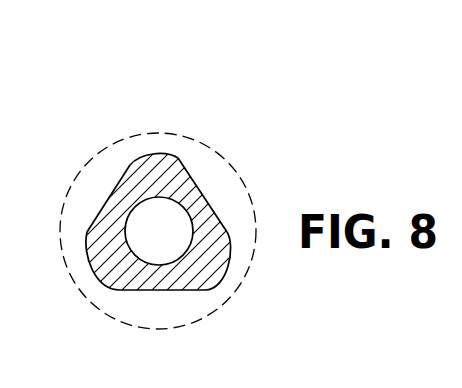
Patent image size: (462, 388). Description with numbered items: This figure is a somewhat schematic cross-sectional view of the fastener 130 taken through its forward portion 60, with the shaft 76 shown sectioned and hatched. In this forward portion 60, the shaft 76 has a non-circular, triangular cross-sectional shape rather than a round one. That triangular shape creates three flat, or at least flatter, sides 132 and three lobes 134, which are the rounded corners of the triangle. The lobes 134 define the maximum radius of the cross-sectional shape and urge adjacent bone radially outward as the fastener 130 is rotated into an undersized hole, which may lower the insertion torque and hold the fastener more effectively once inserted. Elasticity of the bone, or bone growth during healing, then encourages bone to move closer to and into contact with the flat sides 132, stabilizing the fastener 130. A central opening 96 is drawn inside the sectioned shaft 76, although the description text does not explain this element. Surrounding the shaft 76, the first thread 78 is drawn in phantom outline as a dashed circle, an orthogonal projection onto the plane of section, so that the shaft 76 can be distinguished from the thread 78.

The fastener 130 is at (118, 111).
The forward portion 60 is at (144, 203).
The first thread 78 is at (230, 160).
The flat sides 132 is at (212, 203).
The lobes 134 is at (160, 153).
The shaft 76 is at (92, 222).
The central lumen 96 is at (186, 241).